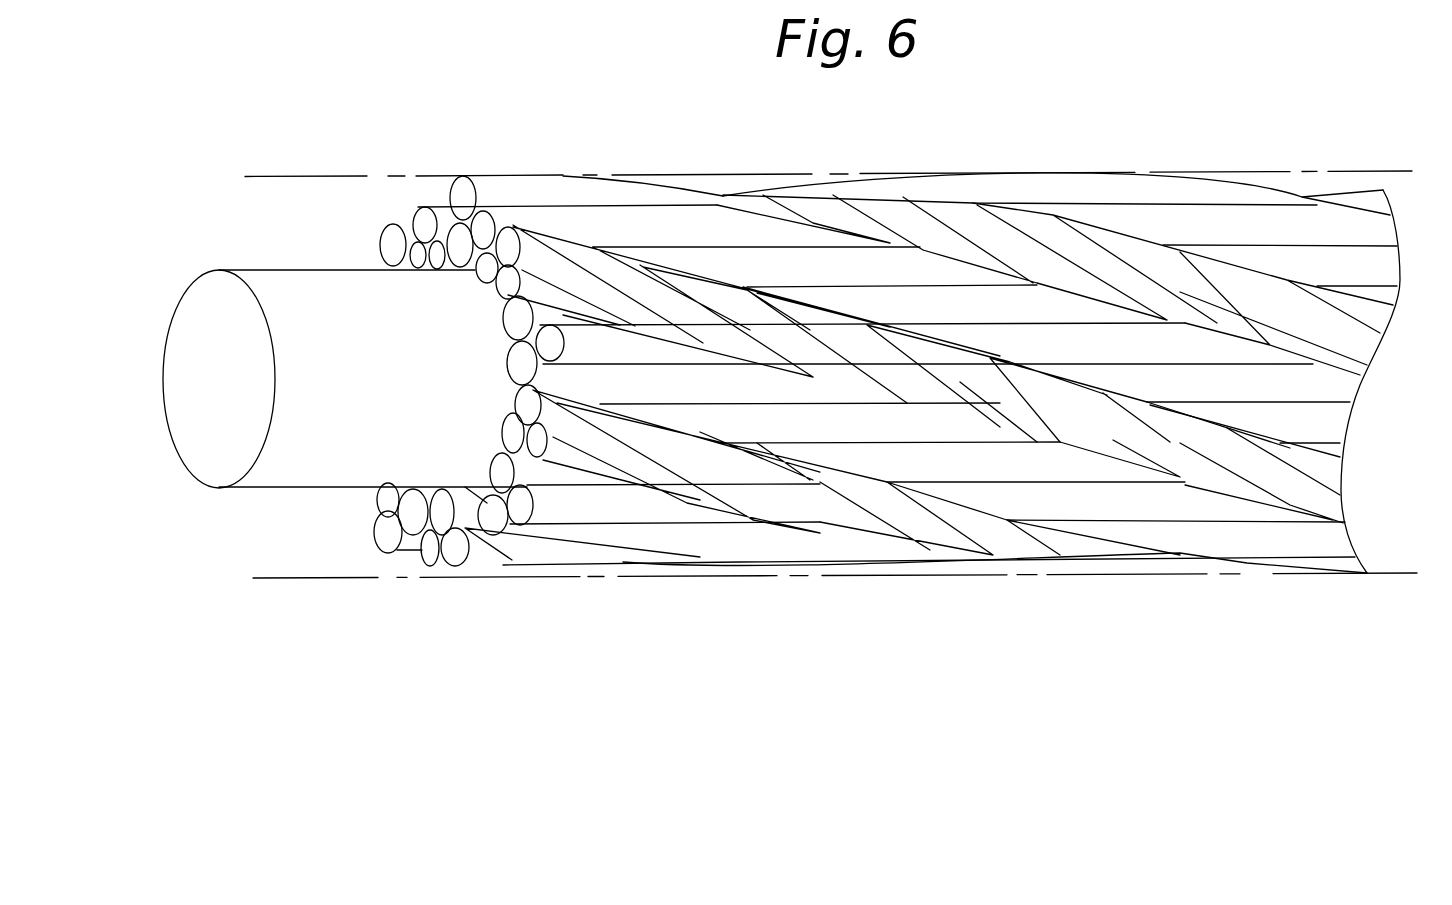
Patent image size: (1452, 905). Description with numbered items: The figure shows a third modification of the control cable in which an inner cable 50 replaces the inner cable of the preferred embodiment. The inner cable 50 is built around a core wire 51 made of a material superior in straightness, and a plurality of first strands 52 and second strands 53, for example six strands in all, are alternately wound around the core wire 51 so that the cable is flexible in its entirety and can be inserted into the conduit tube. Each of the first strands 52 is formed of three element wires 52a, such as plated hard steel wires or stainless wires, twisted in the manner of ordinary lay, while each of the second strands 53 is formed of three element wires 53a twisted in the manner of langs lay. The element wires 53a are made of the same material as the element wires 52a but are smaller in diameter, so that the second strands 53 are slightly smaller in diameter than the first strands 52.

The inner cable 50 is at (953, 162).
The core wire 51 is at (293, 270).
The first strands 52 is at (662, 186).
The element wires 52a is at (498, 175).
The second strands 53 is at (689, 505).
The element wires 53a is at (560, 472).